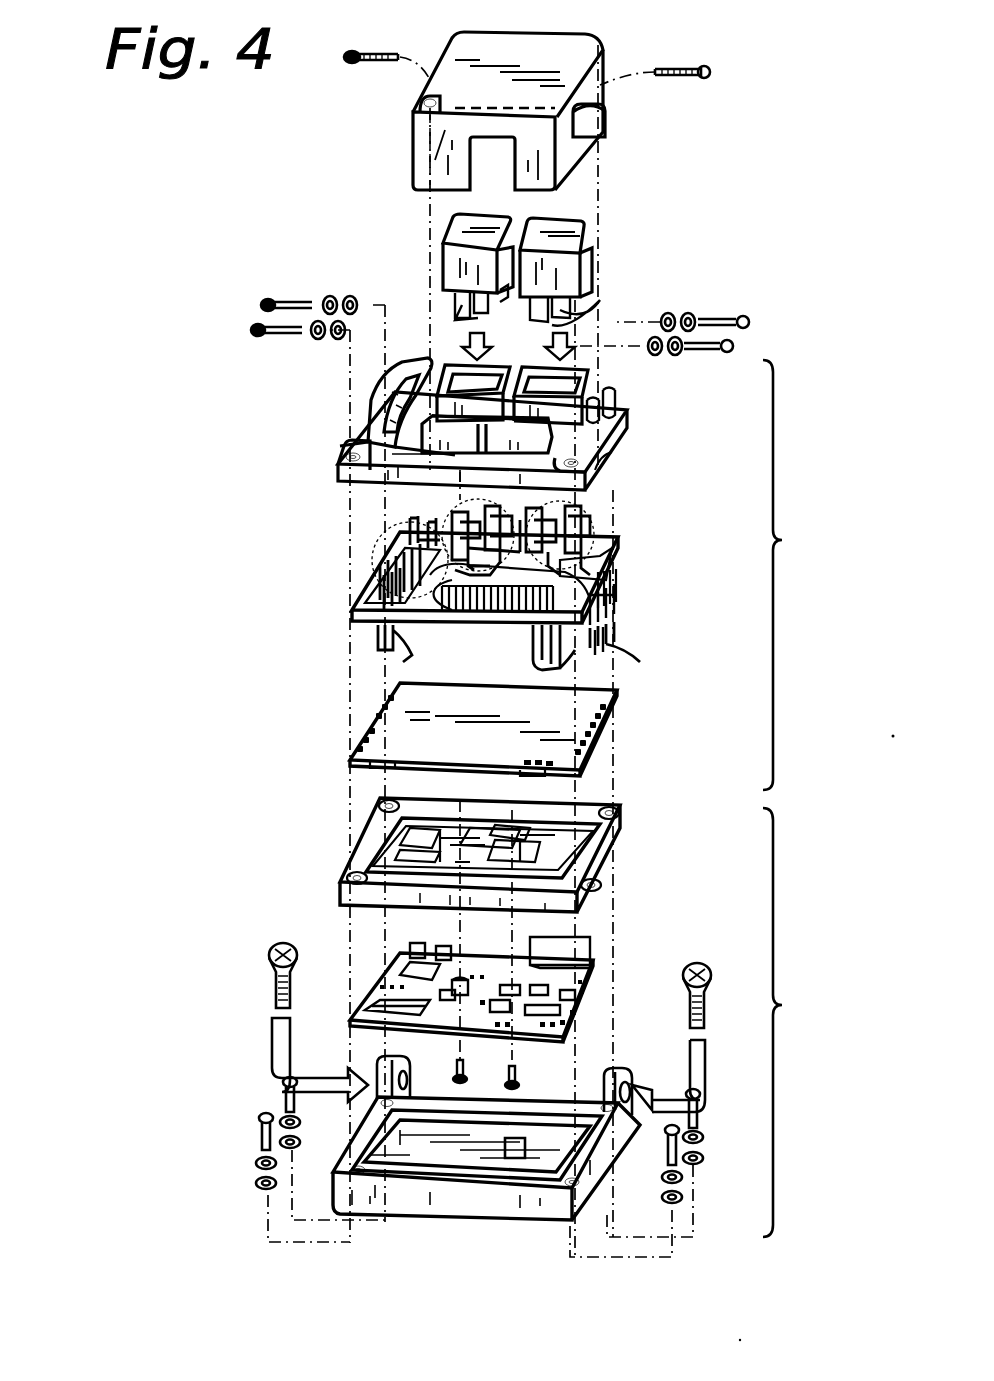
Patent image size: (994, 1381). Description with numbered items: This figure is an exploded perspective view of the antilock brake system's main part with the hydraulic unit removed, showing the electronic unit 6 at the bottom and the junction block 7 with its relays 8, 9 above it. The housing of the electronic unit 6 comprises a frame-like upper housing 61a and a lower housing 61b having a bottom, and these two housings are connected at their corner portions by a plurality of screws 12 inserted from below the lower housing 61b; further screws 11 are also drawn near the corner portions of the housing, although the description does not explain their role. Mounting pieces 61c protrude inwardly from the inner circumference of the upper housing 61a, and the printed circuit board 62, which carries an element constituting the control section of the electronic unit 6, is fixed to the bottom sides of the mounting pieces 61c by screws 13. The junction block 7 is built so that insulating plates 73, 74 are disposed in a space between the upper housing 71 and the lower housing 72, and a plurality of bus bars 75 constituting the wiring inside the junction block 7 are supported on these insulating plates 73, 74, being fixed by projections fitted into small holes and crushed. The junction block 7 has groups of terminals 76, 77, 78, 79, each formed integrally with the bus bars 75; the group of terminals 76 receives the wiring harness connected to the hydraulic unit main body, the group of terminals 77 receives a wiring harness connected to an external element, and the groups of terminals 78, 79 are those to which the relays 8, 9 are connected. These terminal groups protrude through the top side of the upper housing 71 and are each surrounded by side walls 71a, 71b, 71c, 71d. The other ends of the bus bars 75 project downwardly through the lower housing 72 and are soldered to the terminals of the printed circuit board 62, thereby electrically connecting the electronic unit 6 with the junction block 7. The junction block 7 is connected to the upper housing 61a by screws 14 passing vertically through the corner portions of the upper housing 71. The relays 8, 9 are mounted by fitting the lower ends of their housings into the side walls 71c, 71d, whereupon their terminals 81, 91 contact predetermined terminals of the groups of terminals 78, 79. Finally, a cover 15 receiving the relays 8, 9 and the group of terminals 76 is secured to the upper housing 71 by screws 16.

The cover 15 is at (570, 38).
The screws 16 is at (385, 52).
The relay 8 is at (445, 232).
The relay 9 is at (585, 225).
The terminals 81 is at (452, 318).
The terminals 91 is at (590, 305).
The screws 14 is at (298, 300).
The upper housing 71 is at (618, 412).
The side wall 71a is at (440, 455).
The side wall 71b is at (365, 398).
The side wall 71c is at (502, 368).
The side wall 71d is at (620, 382).
The group of terminals 78 is at (605, 480).
The group of terminals 79 is at (595, 505).
The group of terminals 77 is at (358, 528).
The insulating plate 73 is at (630, 545).
The insulating plate 74 is at (625, 560).
The bus bars 75 is at (355, 595).
The group of terminals 76 is at (630, 620).
The lower housing 72 is at (612, 715).
The upper housing 61a is at (615, 850).
The mounting pieces 61c is at (500, 825).
The printed circuit board 62 is at (592, 966).
The screws 11 is at (270, 985).
The screws 12 is at (282, 1100).
The screws 13 is at (465, 1060).
The lower housing 61b is at (513, 1205).
The junction block 7 is at (783, 575).
The electronic unit 6 is at (783, 1022).